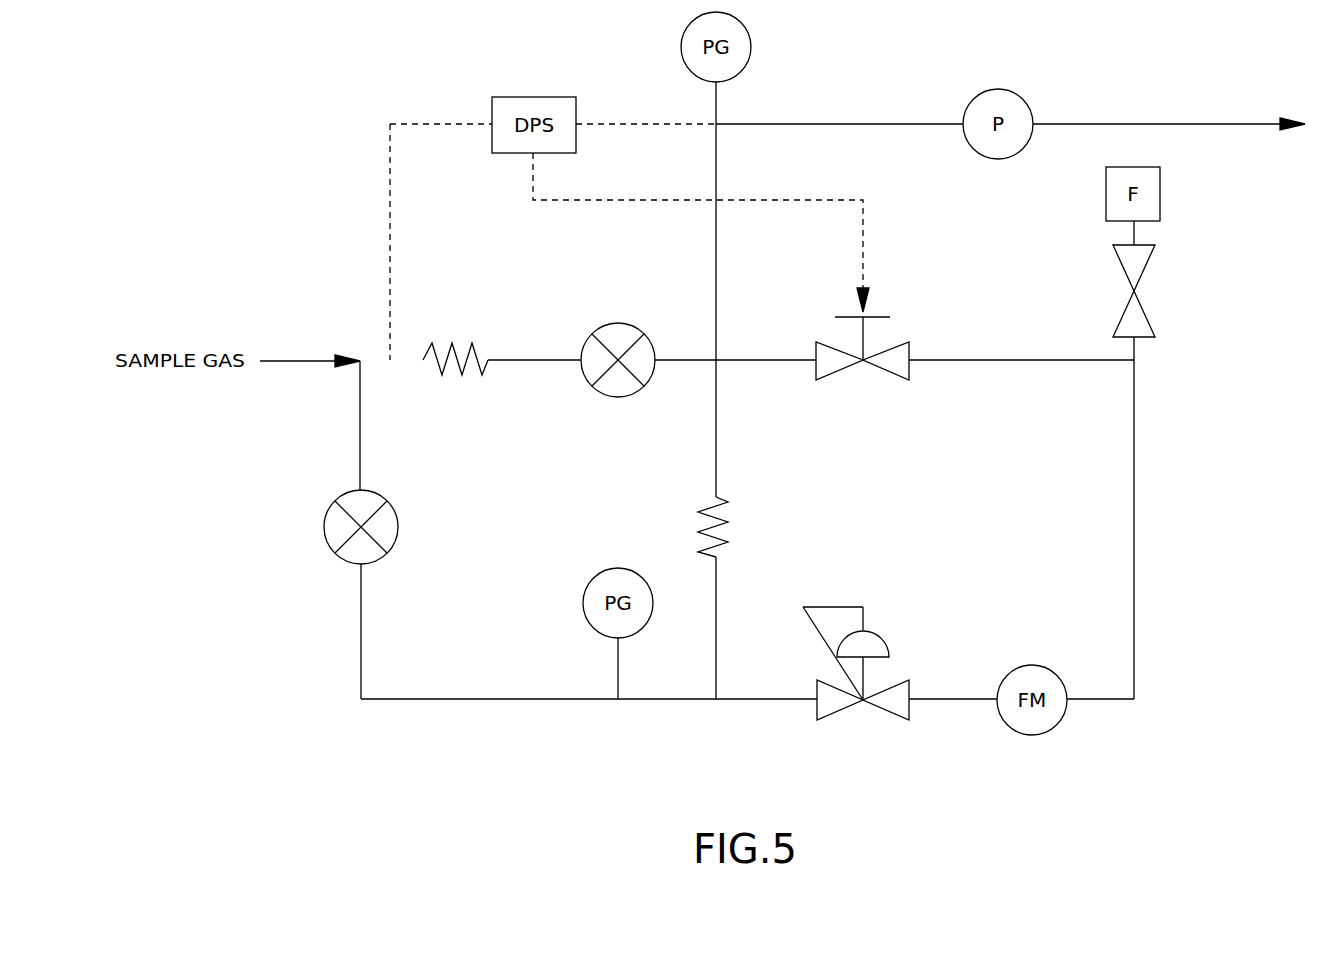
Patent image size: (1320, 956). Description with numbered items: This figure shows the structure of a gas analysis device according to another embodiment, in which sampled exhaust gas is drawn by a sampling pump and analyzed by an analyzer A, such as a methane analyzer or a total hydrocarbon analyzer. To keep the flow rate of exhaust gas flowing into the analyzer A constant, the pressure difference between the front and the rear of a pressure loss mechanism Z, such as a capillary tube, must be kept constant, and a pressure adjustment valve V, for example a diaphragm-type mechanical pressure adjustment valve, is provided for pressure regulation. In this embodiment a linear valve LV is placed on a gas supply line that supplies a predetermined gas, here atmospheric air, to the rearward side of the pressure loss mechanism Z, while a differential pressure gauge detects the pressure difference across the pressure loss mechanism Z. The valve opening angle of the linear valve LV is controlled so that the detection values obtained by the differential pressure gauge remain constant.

The analyzer A is at (617, 322).
The pressure loss mechanism Z is at (452, 375).
The linear valve LV is at (840, 370).
The pressure adjustment valve V is at (840, 718).